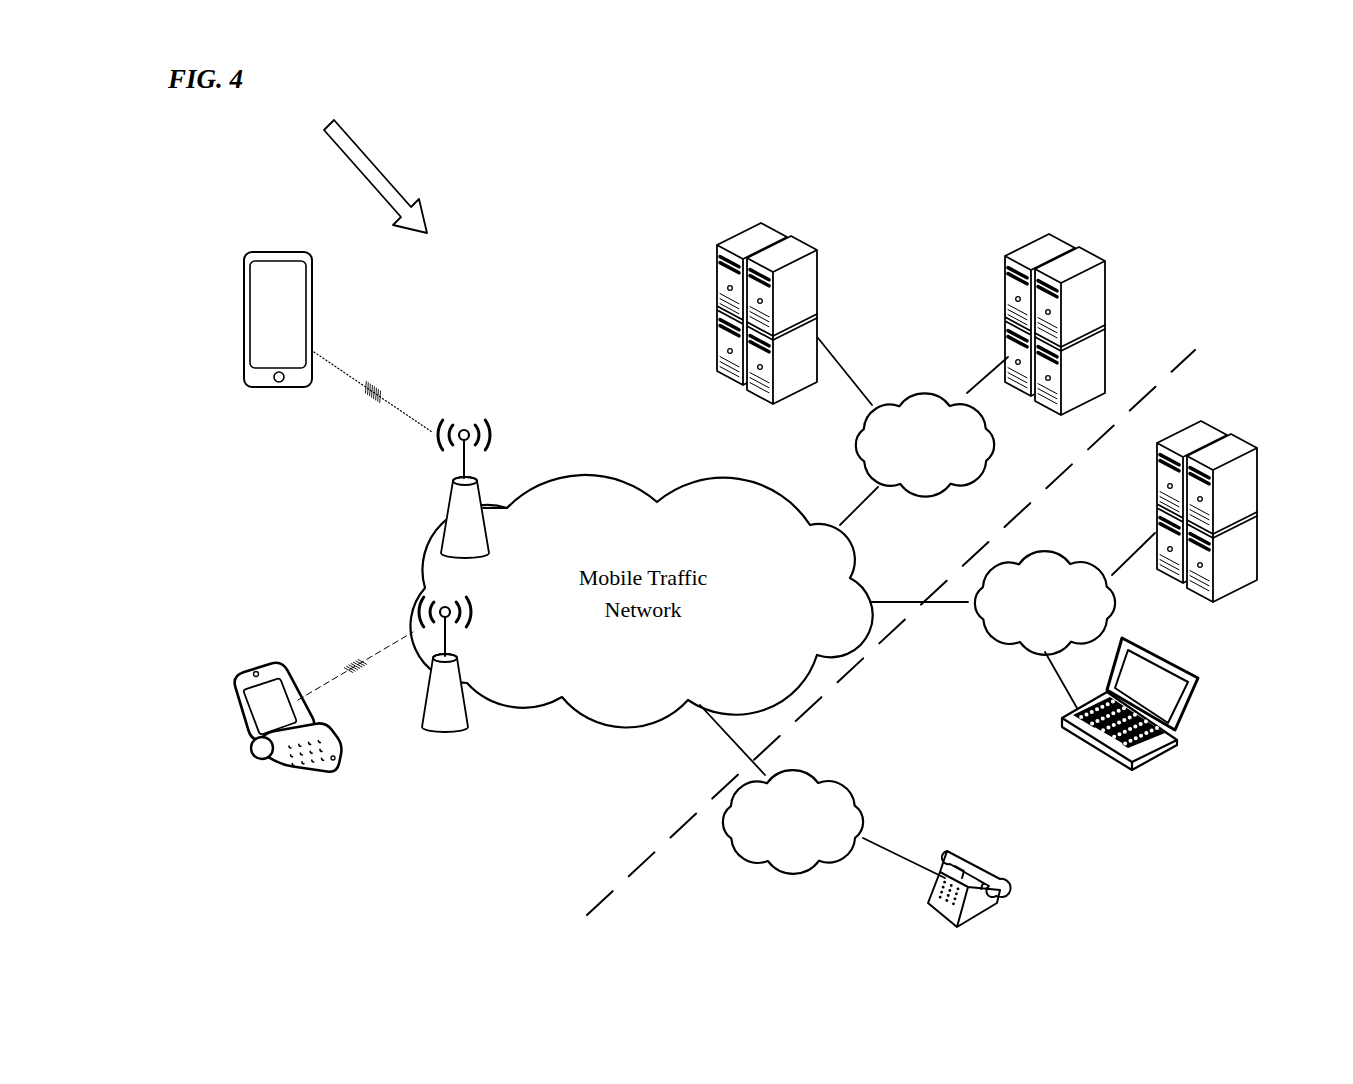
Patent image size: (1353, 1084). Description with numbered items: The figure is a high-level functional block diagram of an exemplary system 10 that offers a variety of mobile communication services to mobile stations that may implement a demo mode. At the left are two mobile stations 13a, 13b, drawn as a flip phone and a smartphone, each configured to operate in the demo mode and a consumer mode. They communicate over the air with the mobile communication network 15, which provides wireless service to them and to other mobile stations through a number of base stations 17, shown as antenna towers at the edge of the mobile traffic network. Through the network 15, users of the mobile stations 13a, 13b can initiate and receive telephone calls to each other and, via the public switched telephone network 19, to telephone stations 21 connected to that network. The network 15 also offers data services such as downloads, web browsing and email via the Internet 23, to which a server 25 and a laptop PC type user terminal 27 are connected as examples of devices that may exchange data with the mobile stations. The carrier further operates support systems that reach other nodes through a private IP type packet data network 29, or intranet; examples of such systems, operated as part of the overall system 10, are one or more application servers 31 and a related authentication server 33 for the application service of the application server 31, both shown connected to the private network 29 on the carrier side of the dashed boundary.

The system 10 is at (365, 168).
The mobile station 13a is at (228, 700).
The mobile station 13b is at (244, 300).
The mobile communication network 15 is at (542, 495).
The base station 17 is at (452, 502).
The public switched telephone network (PSTN) 19 is at (866, 805).
The telephone station 21 is at (927, 912).
The Internet 23 is at (990, 648).
The server 25 is at (1155, 514).
The laptop PC type user terminal 27 is at (1097, 752).
The private IP type packet data network 29 is at (1002, 458).
The application server 31 is at (818, 268).
The authentication server 33 is at (1106, 324).